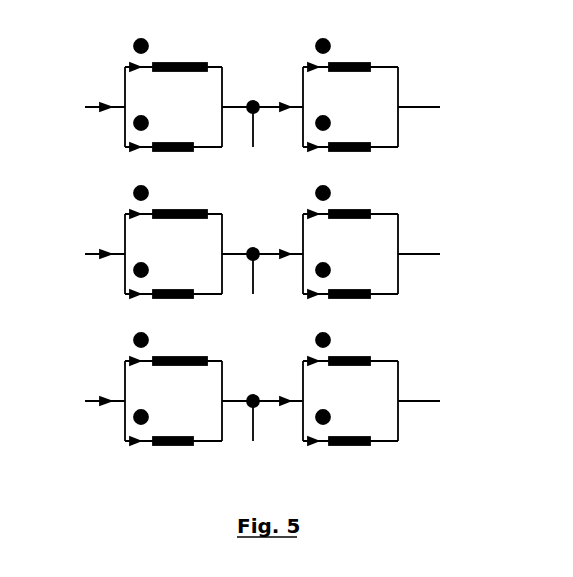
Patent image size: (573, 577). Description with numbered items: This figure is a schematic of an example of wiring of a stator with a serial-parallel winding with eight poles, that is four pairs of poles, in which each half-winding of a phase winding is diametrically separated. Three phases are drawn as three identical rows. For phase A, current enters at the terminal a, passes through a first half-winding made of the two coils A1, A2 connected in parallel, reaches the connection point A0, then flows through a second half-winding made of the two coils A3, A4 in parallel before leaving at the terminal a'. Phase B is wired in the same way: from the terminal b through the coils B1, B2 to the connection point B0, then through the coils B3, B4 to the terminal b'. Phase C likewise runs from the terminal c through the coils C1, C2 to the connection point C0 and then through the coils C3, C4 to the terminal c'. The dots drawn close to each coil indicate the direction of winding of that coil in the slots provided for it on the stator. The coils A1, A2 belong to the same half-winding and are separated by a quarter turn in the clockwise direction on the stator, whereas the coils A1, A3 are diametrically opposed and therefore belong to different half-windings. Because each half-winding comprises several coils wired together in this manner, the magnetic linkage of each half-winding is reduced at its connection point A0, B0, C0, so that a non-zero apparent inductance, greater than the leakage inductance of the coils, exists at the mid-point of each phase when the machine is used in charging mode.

The phase A terminal a is at (92, 104).
The phase A output terminal a' is at (429, 104).
The phase B terminal b is at (92, 251).
The phase B output terminal b' is at (430, 251).
The phase C terminal c is at (92, 398).
The phase C output terminal c' is at (429, 398).
The connection point A0 is at (248, 138).
The coil A1 is at (170, 55).
The coil A2 is at (163, 133).
The coil A3 is at (343, 55).
The coil A4 is at (343, 133).
The connection point B0 is at (248, 284).
The coil B1 is at (170, 202).
The coil B2 is at (163, 280).
The coil B3 is at (343, 202).
The coil B4 is at (343, 280).
The connection point C0 is at (248, 431).
The coil C1 is at (170, 349).
The coil C2 is at (163, 427).
The coil C3 is at (343, 349).
The coil C4 is at (343, 427).